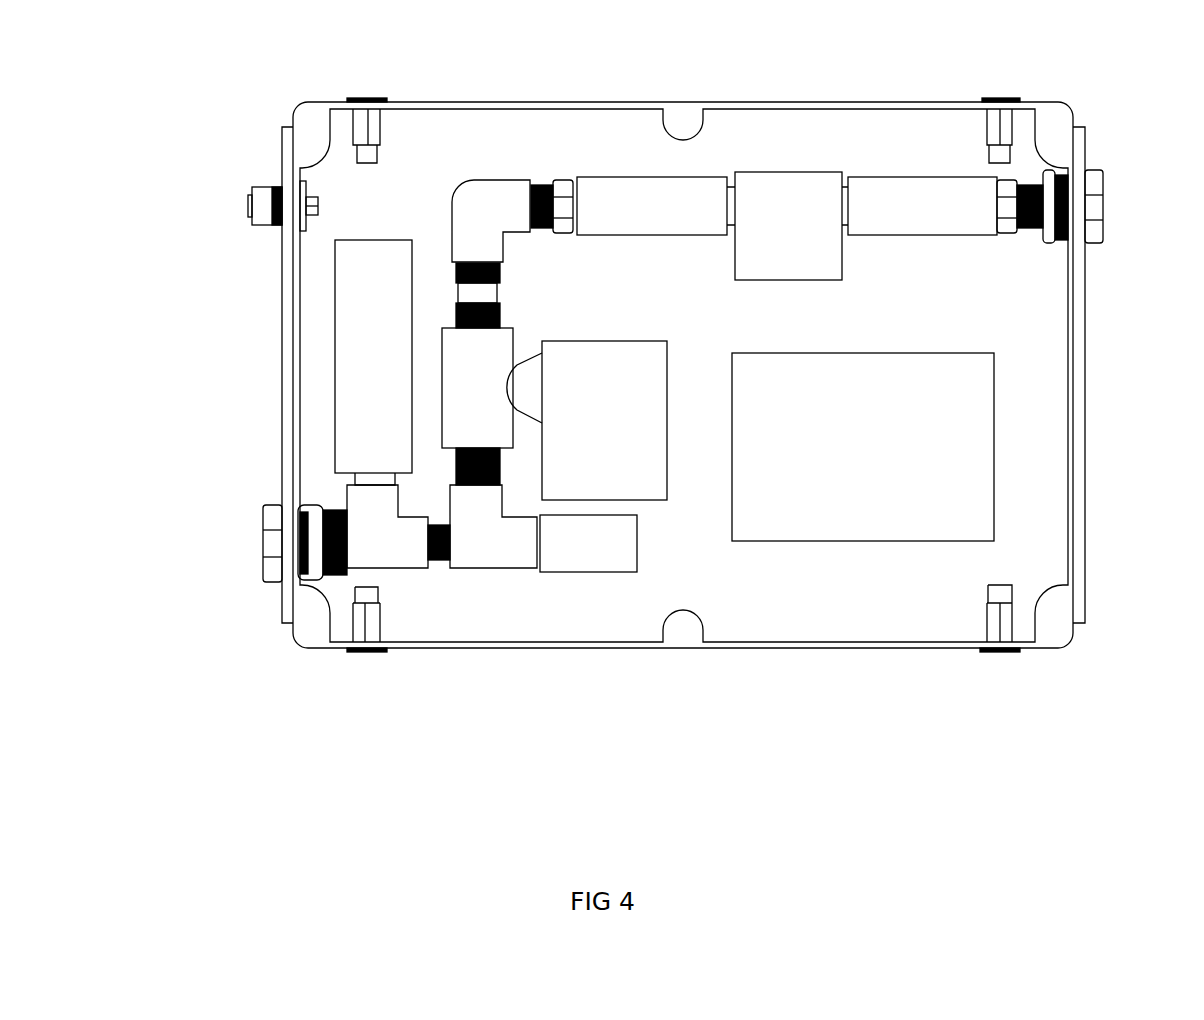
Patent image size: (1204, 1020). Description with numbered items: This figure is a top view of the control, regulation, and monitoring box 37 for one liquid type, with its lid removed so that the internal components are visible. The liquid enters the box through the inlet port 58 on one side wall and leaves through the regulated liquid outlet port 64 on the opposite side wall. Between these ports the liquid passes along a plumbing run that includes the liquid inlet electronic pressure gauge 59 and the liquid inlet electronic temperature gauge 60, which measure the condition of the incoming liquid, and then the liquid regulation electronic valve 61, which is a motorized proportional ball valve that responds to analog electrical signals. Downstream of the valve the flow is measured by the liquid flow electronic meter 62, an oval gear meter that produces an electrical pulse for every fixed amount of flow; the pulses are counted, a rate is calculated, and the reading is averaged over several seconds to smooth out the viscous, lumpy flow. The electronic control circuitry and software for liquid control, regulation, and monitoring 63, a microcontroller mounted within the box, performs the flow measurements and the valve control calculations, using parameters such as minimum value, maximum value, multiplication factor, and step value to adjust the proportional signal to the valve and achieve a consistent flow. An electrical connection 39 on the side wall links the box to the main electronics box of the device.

The control, regulation, and monitoring box 37 is at (304, 113).
The electrical connection to main electronics box 39 is at (261, 204).
The inlet port to liquid control, regulation, and monitoring box 58 is at (275, 545).
The liquid inlet electronic pressure gauge 59 is at (386, 403).
The liquid inlet electronic temperature gauge 60 is at (593, 547).
The liquid regulation electronic valve 61 is at (610, 398).
The liquid flow electronic meter 62 is at (790, 230).
The electronic control circuitry and software for liquid control, regulation, and mo 63 is at (880, 494).
The regulated liquid outlet port 64 is at (1096, 210).